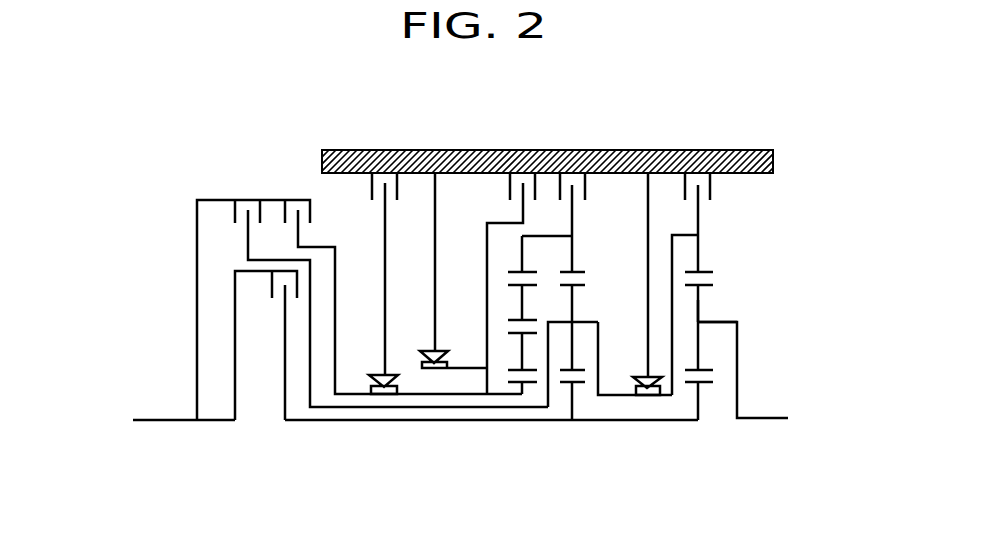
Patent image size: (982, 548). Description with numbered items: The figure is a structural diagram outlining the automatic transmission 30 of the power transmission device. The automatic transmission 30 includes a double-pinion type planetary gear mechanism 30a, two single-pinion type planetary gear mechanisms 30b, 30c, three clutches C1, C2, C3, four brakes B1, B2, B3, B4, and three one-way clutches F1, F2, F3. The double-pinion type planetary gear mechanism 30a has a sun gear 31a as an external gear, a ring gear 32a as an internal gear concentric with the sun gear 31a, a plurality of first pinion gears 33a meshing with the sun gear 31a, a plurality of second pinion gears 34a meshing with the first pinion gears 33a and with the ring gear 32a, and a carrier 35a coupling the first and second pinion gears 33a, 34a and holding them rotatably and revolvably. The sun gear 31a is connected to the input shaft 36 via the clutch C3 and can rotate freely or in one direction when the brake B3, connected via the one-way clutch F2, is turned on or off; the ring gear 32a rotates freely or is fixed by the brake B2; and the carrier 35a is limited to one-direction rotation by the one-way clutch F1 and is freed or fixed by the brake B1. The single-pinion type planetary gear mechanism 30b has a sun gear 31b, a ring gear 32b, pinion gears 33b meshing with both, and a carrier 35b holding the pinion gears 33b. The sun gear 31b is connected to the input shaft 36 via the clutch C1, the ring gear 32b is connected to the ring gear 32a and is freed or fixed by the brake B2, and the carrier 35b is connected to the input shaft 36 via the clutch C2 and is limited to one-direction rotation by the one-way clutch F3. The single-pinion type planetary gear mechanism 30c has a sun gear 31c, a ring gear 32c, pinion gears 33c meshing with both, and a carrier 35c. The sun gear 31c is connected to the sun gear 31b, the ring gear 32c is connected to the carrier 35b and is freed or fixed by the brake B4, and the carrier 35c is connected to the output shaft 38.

The automatic transmission 30 is at (158, 163).
The double-pinion type planetary gear mechanism 30a is at (502, 238).
The single-pinion type planetary gear mechanism 30b is at (610, 240).
The single-pinion type planetary gear mechanism 30c is at (721, 241).
The sun gear 31a is at (520, 385).
The sun gear 31b is at (572, 384).
The sun gear 31c is at (693, 385).
The ring gear 32a is at (513, 272).
The ring gear 32b is at (577, 271).
The ring gear 32c is at (702, 272).
The first pinion gears 33a is at (520, 356).
The pinion gears 33b is at (573, 300).
The pinion gears 33c is at (700, 300).
The second pinion gears 34a is at (522, 309).
The carrier 35a is at (520, 305).
The carrier 35b is at (583, 321).
The carrier 35c is at (720, 321).
The input shaft 36 is at (173, 423).
The output shaft 38 is at (762, 418).
The clutch C1 is at (271, 292).
The clutch C2 is at (240, 199).
The clutch C3 is at (300, 199).
The brake B1 is at (508, 187).
The brake B2 is at (560, 187).
The brake B3 is at (371, 185).
The brake B4 is at (685, 187).
The one-way clutch F1 is at (423, 367).
The one-way clutch F2 is at (370, 385).
The one-way clutch F3 is at (633, 389).